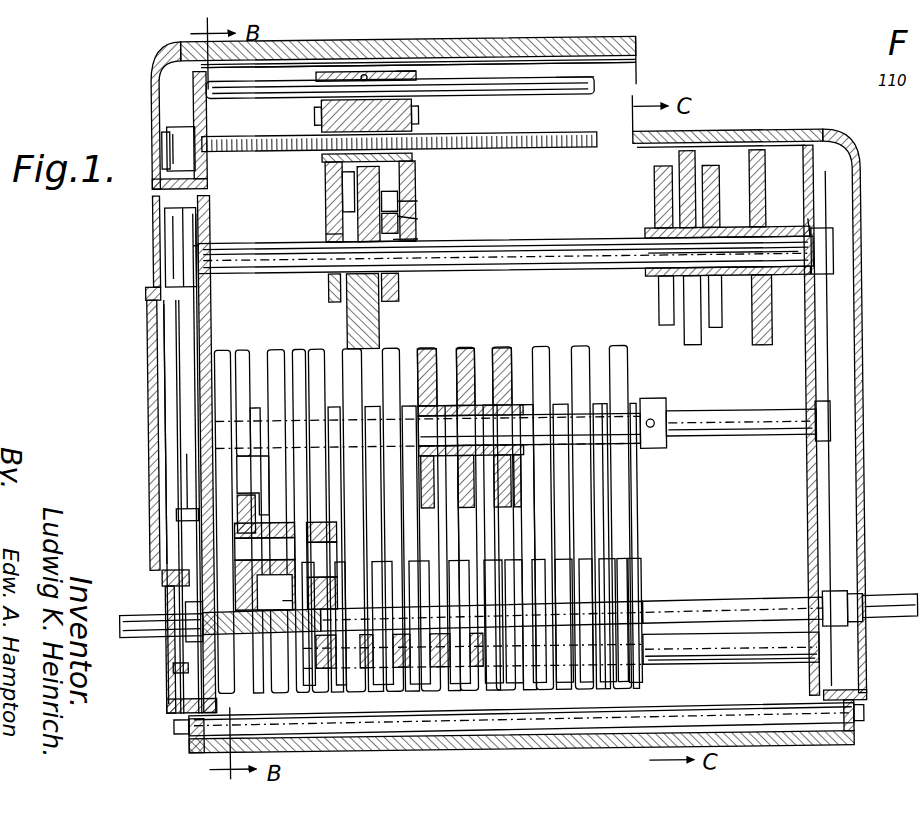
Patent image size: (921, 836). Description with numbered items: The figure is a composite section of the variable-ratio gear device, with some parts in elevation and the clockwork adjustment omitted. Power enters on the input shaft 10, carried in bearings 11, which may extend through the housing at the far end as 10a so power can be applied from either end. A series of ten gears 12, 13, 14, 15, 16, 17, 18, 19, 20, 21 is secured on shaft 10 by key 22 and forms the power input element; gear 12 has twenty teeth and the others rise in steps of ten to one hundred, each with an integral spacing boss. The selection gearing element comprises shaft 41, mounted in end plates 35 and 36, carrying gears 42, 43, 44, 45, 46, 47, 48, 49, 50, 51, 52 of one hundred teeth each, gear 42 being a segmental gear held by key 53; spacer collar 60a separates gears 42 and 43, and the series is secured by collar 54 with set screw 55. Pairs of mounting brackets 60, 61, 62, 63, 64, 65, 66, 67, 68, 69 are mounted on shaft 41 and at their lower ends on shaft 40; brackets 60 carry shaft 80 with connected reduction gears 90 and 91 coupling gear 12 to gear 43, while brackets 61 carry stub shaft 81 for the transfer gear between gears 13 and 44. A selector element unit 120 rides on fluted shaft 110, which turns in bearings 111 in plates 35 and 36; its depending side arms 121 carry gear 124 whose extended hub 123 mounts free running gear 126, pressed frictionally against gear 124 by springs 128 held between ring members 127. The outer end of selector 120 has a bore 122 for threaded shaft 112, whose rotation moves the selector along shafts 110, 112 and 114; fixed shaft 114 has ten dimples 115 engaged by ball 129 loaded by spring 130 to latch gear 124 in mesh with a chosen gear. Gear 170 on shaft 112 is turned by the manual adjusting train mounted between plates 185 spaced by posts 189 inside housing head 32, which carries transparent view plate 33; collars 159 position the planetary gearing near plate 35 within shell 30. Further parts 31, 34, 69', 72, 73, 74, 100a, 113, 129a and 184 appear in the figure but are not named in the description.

The input shaft 10 is at (890, 600).
The shaft end 10a is at (137, 634).
The bearings 11 is at (165, 610).
The gear 12 is at (252, 670).
The gear 13 is at (322, 676).
The gear 14 is at (358, 676).
The gear 15 is at (412, 676).
The gear 16 is at (435, 680).
The gear 17 is at (490, 680).
The gear 18 is at (518, 680).
The gear 19 is at (557, 683).
The gear 20 is at (583, 685).
The gear 21 is at (640, 686).
The key 22 is at (660, 604).
The shell 30 is at (290, 44).
The housing end wall 31 is at (864, 198).
The housing head 32 is at (155, 92).
The transparent view plate 33 is at (148, 333).
The cover plate 34 is at (485, 64).
The end plate 35 is at (816, 336).
The end plate 36 is at (200, 540).
The shaft 40 is at (725, 670).
The shaft 41 is at (720, 438).
The segmental gear 42 is at (232, 343).
The gear 43 is at (258, 347).
The gear 44 is at (302, 352).
The gear 45 is at (324, 352).
The gear 46 is at (418, 352).
The gear 47 is at (458, 352).
The gear 48 is at (494, 352).
The gear 49 is at (534, 352).
The gear 50 is at (572, 352).
The gear 51 is at (610, 352).
The gear 52 is at (640, 340).
The key 53 is at (250, 420).
The collar 54 is at (657, 402).
The set screw 55 is at (660, 426).
The mounting bracket 60 is at (240, 422).
The spacer collar 60a is at (266, 488).
The mounting bracket 61 is at (305, 405).
The mounting bracket 62 is at (340, 405).
The mounting bracket 63 is at (375, 405).
The mounting bracket 64 is at (412, 405).
The mounting bracket 65 is at (452, 405).
The mounting bracket 66 is at (490, 405).
The mounting bracket 67 is at (527, 405).
The mounting bracket 68 is at (270, 492).
The mounting bracket 69 is at (605, 530).
The pinion 69' is at (651, 545).
The gear 72 is at (285, 677).
The gear 73 is at (388, 676).
The shaft 74 is at (777, 668).
The shaft 80 is at (264, 567).
The stub shaft 81 is at (321, 565).
The gear 90 is at (274, 592).
The gear 91 is at (282, 602).
The shaft portion 100a is at (783, 240).
The shaft 110 is at (246, 232).
The bearings 111 is at (196, 242).
The threaded shaft 112 is at (278, 125).
The hub 113 is at (198, 142).
The fixed shaft-like member 114 is at (543, 94).
The dimples 115 is at (505, 74).
The selector element unit 120 is at (418, 112).
The side arms 121 is at (326, 182).
The bore 122 is at (420, 158).
The extended hub 123 is at (410, 238).
The gear 124 is at (348, 305).
The free running gear 126 is at (392, 192).
The ring member 127 is at (420, 200).
The springs 128 is at (420, 218).
The ball member 129 is at (402, 70).
The pin 129a is at (328, 232).
The spring 130 is at (368, 70).
The collars 159 is at (783, 285).
The gear 170 is at (165, 126).
The hub 184 is at (183, 200).
The plates 185 is at (195, 342).
The spacer posts 189 is at (183, 508).